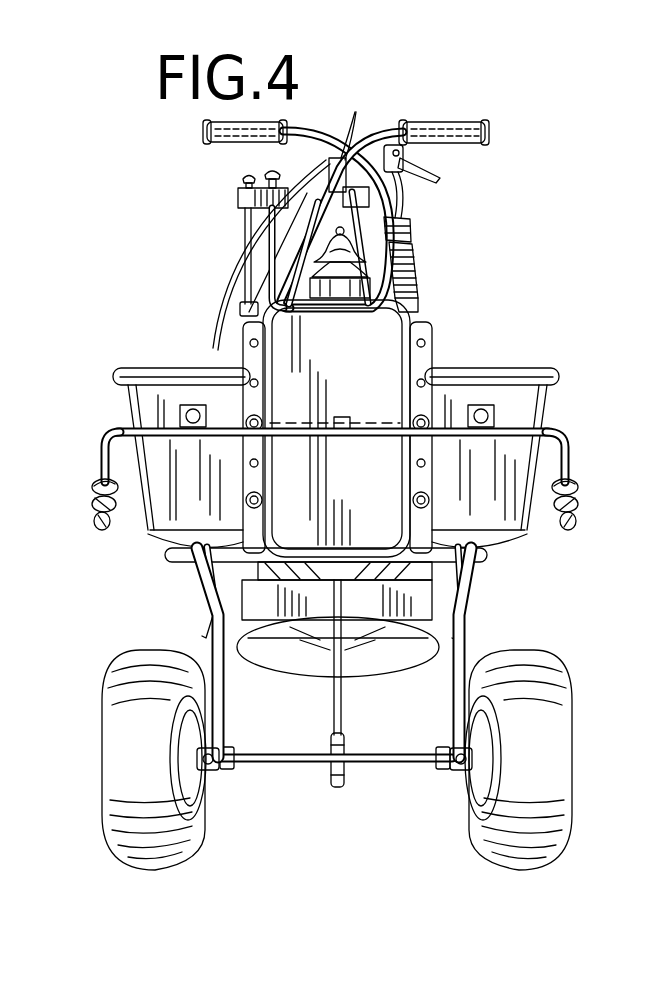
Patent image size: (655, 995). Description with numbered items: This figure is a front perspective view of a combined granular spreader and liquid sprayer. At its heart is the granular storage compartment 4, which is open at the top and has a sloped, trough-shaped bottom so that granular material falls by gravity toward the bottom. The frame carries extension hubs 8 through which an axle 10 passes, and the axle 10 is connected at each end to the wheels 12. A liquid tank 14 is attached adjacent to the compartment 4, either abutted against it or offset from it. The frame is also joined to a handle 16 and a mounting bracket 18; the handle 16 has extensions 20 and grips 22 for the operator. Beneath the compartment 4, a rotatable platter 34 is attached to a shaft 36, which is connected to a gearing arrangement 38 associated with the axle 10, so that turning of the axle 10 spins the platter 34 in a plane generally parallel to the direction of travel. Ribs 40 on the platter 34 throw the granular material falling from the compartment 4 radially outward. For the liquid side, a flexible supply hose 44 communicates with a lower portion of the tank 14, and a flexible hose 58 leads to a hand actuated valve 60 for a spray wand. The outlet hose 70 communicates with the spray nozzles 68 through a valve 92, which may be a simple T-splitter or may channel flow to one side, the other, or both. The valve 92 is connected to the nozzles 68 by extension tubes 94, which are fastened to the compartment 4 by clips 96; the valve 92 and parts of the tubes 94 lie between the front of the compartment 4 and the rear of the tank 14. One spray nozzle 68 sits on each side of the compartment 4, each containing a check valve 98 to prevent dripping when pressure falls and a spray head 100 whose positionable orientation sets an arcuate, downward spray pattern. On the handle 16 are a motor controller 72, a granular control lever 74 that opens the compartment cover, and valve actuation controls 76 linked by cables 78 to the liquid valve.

The granular storage compartment 4 is at (147, 534).
The extension hubs 8 is at (208, 772).
The axle 10 is at (295, 768).
The wheels 12 is at (130, 728).
The liquid tank 14 is at (435, 400).
The handle 16 is at (388, 125).
The mounting bracket 18 is at (130, 398).
The extensions 20 is at (312, 168).
The grips 22 is at (480, 125).
The rotatable platter 34 is at (450, 640).
The shaft 36 is at (343, 690).
The gearing arrangement 38 is at (345, 740).
The ribs 40 is at (290, 628).
The flexible supply hose 44 is at (215, 570).
The flexible hose 58 is at (404, 205).
The hand actuated valve 60 is at (418, 272).
The spray nozzle 68 is at (96, 484).
The outlet hose 70 is at (480, 566).
The motor controller 72 is at (440, 181).
The granular control lever 74 is at (337, 125).
The valve actuation controls 76 is at (245, 178).
The cables 78 is at (235, 298).
The valve 92 is at (345, 415).
The extension tubes 94 is at (100, 432).
The clips 96 is at (180, 412).
The check valve 98 is at (93, 503).
The spray head 100 is at (95, 524).